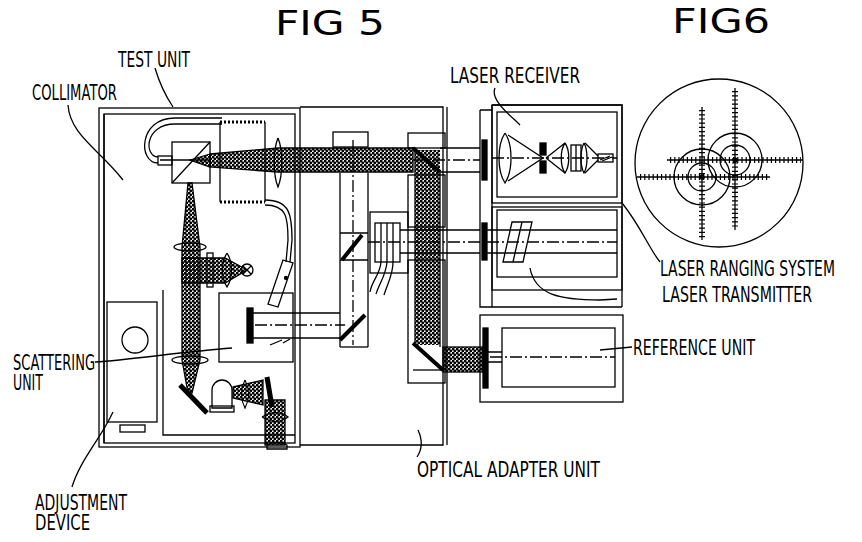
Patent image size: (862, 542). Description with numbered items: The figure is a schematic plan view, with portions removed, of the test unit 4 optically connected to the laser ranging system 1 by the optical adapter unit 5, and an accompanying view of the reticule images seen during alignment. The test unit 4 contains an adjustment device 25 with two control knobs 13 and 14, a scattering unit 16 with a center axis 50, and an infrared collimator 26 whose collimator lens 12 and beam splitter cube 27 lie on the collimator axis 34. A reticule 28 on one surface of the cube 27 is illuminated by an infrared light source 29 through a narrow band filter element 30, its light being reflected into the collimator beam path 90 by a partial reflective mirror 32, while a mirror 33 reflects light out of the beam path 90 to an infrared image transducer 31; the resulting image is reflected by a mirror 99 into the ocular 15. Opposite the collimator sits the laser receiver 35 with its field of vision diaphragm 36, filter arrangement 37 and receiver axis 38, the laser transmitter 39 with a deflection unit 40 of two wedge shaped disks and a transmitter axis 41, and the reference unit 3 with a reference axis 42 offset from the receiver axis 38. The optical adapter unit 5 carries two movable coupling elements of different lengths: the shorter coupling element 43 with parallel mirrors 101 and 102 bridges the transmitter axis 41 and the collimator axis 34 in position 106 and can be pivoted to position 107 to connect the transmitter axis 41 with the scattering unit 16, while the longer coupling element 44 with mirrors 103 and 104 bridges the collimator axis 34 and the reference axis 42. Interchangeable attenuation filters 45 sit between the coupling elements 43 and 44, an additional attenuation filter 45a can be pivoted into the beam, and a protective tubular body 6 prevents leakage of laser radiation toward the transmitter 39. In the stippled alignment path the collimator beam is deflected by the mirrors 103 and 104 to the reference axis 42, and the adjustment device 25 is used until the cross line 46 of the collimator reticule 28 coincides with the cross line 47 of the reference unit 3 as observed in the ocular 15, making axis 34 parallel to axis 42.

In FIG. 5, the laser ranging system 1 is at (618, 203).
In FIG. 5, the reference unit 3 is at (615, 394).
In FIG. 5, the test unit 4 is at (160, 107).
In FIG. 5, the optical adapter unit 5 is at (383, 437).
In FIG. 5, the protective tubular body 6 is at (464, 268).
In FIG. 5, the collimator lens 12 is at (280, 140).
In FIG. 5, the control knob 13 is at (127, 340).
In FIG. 5, the control knob 14 is at (133, 433).
In FIG. 5, the ocular 15 is at (275, 449).
In FIG. 5, the scattering unit 16 is at (236, 340).
In FIG. 5, the adjustment device 25 is at (118, 398).
In FIG. 5, the collimator 26 is at (133, 242).
In FIG. 5, the beam splitter cube 27 is at (197, 142).
In FIG. 5, the reticule 28 is at (170, 186).
In FIG. 5, the infrared light source 29 is at (247, 266).
In FIG. 5, the filter element 30 is at (216, 254).
In FIG. 5, the infrared image transducer 31 is at (223, 410).
In FIG. 5, the partial reflective mirror 32 is at (182, 272).
In FIG. 5, the mirror 33 is at (187, 410).
In FIG. 5, the collimator axis 34 is at (242, 150).
In FIG. 5, the laser receiver 35 is at (600, 120).
In FIG. 5, the field of vision diaphragm 36 is at (543, 153).
In FIG. 5, the filter arrangement 37 is at (570, 172).
In FIG. 5, the receiver axis 38 is at (455, 160).
In FIG. 5, the laser transmitter 39 is at (613, 262).
In FIG. 5, the deflection unit 40 is at (612, 290).
In FIG. 5, the transmitter axis 41 is at (455, 243).
In FIG. 5, the reference axis 42 is at (461, 373).
In FIG. 5, the coupling element 43 is at (340, 200).
In FIG. 5, the coupling element 44 is at (406, 333).
In FIG. 5, the attenuation filters 45 is at (400, 268).
In FIG. 5, the additional attenuation filter 45a is at (404, 298).
In FIG. 6, the cross line 46 is at (702, 127).
In FIG. 6, the cross line 47 is at (777, 153).
In FIG. 5, the center axis 50 is at (314, 330).
In FIG. 5, the beam path 90 is at (185, 323).
In FIG. 5, the mirror 99 is at (279, 407).
In FIG. 5, the mirror 101 is at (362, 233).
In FIG. 5, the mirror 102 is at (354, 342).
In FIG. 5, the mirror 103 is at (427, 150).
In FIG. 5, the mirror 104 is at (428, 375).
In FIG. 5, the position 106 is at (343, 194).
In FIG. 5, the position 107 is at (341, 301).